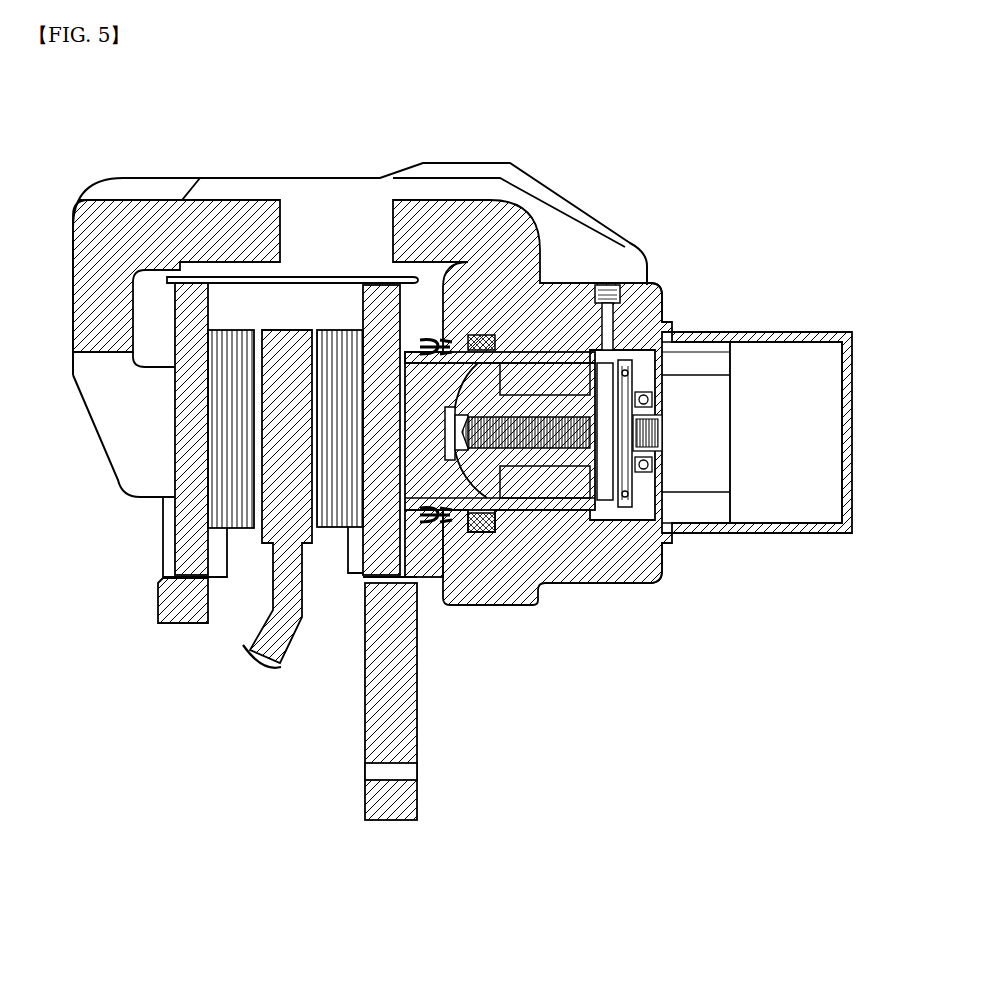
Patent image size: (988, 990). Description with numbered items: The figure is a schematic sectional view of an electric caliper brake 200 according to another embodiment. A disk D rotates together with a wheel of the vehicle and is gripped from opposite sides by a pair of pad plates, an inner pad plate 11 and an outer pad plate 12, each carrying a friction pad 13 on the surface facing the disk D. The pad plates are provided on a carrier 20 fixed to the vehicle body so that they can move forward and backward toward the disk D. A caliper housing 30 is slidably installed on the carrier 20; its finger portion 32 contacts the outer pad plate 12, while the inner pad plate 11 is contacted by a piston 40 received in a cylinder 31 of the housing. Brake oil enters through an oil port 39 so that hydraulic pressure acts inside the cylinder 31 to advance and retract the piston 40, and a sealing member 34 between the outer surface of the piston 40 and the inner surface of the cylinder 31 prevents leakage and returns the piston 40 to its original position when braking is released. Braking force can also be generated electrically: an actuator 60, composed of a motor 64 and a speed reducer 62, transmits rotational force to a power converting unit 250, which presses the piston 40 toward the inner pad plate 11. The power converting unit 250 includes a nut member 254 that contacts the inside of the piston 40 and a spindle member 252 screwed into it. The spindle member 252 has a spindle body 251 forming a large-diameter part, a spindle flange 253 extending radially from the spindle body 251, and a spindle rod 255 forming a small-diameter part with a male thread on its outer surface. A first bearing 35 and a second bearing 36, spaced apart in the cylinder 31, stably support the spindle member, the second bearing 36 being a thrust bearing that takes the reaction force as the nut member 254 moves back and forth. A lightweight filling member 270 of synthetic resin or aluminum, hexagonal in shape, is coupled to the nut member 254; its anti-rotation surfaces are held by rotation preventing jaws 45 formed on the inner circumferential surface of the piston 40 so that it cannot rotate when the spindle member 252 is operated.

The caliper housing 30 is at (488, 196).
The finger portion 32 is at (103, 403).
The outer pad plate 12 is at (193, 545).
The friction pad 13 is at (227, 511).
The inner pad plate 11 is at (363, 573).
The disk D is at (280, 637).
The carrier 20 is at (365, 717).
The electric caliper brake 200 is at (622, 419).
The piston 40 is at (555, 365).
The oil port 39 is at (625, 300).
The cylinder 31 is at (657, 560).
The rotation preventing jaws 45 is at (604, 340).
The filling member 270 is at (562, 365).
The power converting unit 250 is at (531, 532).
The nut member 254 is at (520, 470).
The spindle member 252 is at (559, 526).
The spindle flange 253 is at (592, 480).
The spindle rod 255 is at (536, 448).
The spindle body 251 is at (632, 480).
The second bearing 36 is at (645, 392).
The first bearing 35 is at (700, 352).
The actuator 60 is at (757, 479).
The speed reducer 62 is at (708, 477).
The motor 64 is at (808, 477).
The sealing member 34 is at (483, 534).